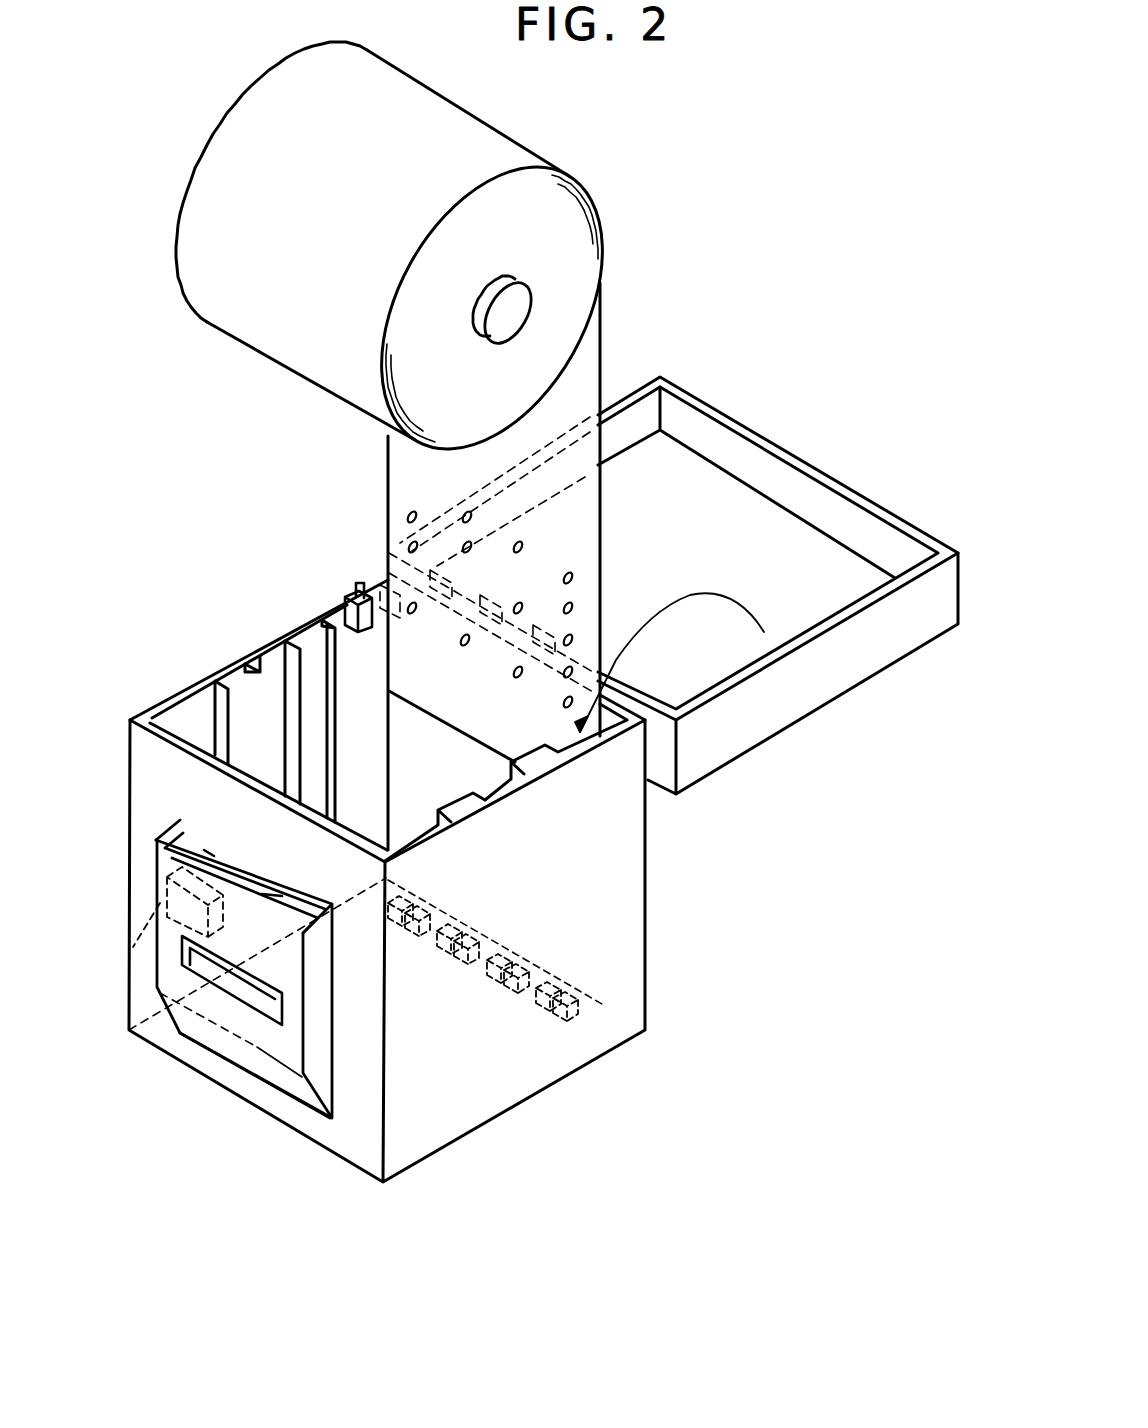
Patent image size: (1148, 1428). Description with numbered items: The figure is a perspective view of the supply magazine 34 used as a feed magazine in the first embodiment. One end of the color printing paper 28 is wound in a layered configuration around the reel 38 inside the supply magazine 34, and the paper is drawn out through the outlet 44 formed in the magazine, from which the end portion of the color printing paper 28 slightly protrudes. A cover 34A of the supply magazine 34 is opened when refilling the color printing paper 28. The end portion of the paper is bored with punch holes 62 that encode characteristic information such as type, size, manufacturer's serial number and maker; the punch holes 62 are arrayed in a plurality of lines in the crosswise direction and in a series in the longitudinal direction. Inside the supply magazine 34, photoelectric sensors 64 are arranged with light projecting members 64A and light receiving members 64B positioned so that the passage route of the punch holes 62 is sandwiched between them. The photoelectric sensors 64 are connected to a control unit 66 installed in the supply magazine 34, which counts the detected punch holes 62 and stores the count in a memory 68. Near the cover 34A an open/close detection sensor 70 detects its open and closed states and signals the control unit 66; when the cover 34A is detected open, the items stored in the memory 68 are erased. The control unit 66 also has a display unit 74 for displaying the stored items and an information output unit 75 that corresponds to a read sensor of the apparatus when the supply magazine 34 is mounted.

The color printing paper 28 is at (604, 328).
The supply magazine 34 is at (236, 660).
The cover 34A is at (752, 425).
The reel 38 is at (495, 341).
The outlet 44 is at (568, 1015).
The punch holes 62 is at (406, 512).
The photoelectric sensors 64 is at (570, 1070).
The light projecting members 64A is at (463, 913).
The light receiving members 64B is at (423, 907).
The control unit 66 is at (153, 855).
The memory 68 is at (126, 958).
The open/close detection sensor 70 is at (346, 606).
The display unit 74 is at (189, 828).
The information output unit 75 is at (199, 1066).